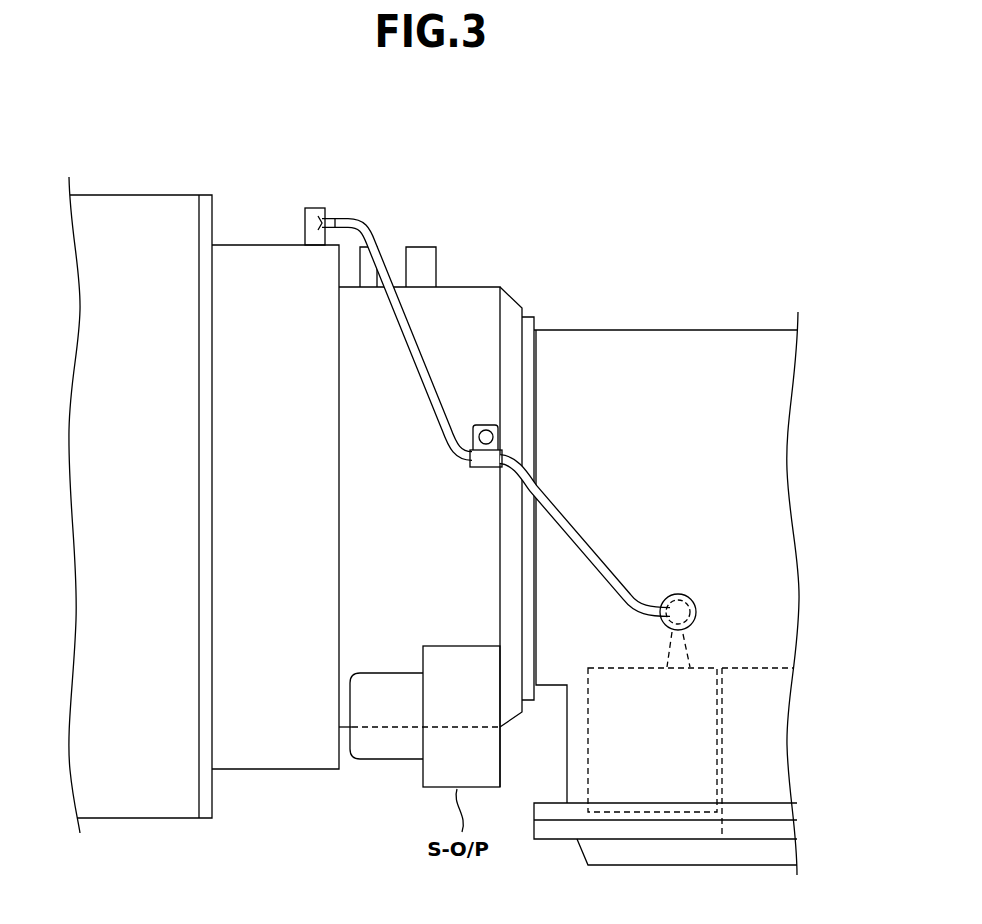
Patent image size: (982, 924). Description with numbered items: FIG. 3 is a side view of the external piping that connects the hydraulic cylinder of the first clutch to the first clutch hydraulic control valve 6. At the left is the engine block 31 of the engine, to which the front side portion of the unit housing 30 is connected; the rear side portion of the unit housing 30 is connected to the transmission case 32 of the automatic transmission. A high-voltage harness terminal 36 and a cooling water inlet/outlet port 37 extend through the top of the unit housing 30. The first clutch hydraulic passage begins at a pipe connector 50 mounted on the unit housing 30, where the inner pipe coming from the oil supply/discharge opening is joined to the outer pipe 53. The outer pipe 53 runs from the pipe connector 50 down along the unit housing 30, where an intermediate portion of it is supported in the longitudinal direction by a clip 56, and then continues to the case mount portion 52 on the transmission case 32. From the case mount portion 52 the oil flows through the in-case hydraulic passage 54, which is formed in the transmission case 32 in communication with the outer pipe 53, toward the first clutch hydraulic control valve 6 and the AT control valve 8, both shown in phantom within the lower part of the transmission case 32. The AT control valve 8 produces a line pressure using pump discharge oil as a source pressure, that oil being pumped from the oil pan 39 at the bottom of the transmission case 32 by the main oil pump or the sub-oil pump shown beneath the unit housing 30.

The engine block 31 is at (132, 193).
The unit housing 30 is at (265, 235).
The pipe connector 50 is at (313, 208).
The cooling water inlet/outlet port 37 is at (424, 260).
The transmission case 32 is at (613, 320).
The high-voltage harness terminal 36 is at (366, 284).
The outer pipe 53 is at (424, 344).
The clip 56 is at (482, 468).
The case mount portion 52 is at (677, 594).
The first clutch hydraulic control valve 6 is at (619, 655).
The in-case hydraulic passage 54 is at (687, 640).
The AT control valve 8 is at (758, 655).
The oil pan 39 is at (657, 866).